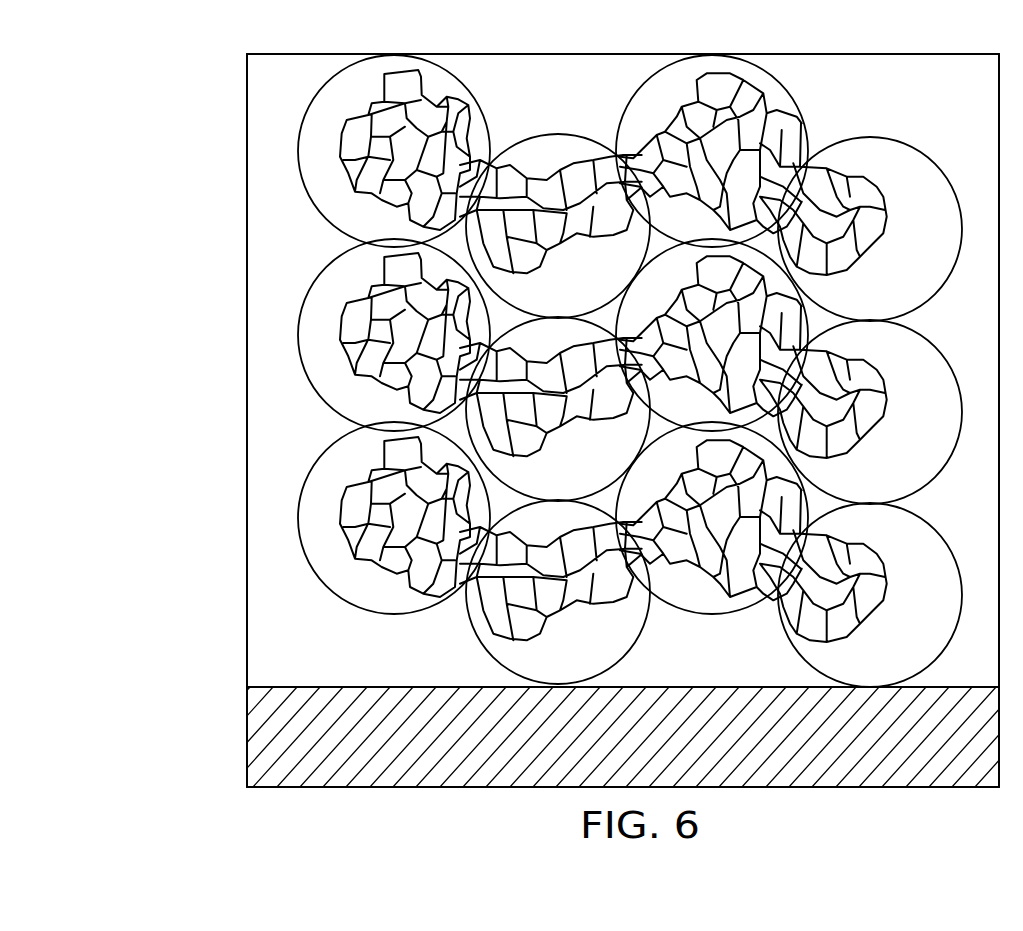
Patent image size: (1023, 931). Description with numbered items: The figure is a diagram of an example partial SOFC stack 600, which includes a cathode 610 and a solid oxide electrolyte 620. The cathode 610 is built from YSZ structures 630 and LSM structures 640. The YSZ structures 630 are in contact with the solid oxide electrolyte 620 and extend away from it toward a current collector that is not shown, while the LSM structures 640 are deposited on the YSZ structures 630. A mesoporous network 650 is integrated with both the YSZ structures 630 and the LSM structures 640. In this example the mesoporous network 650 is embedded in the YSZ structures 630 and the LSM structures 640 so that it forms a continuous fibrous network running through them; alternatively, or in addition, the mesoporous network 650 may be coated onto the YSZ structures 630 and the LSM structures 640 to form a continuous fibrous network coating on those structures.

The partial SOFC stack 600 is at (194, 70).
The cathode 610 is at (247, 352).
The solid oxide electrolyte 620 is at (247, 732).
The YSZ structures 630 is at (724, 388).
The LSM structures 640 is at (534, 355).
The mesoporous network 650 is at (786, 136).